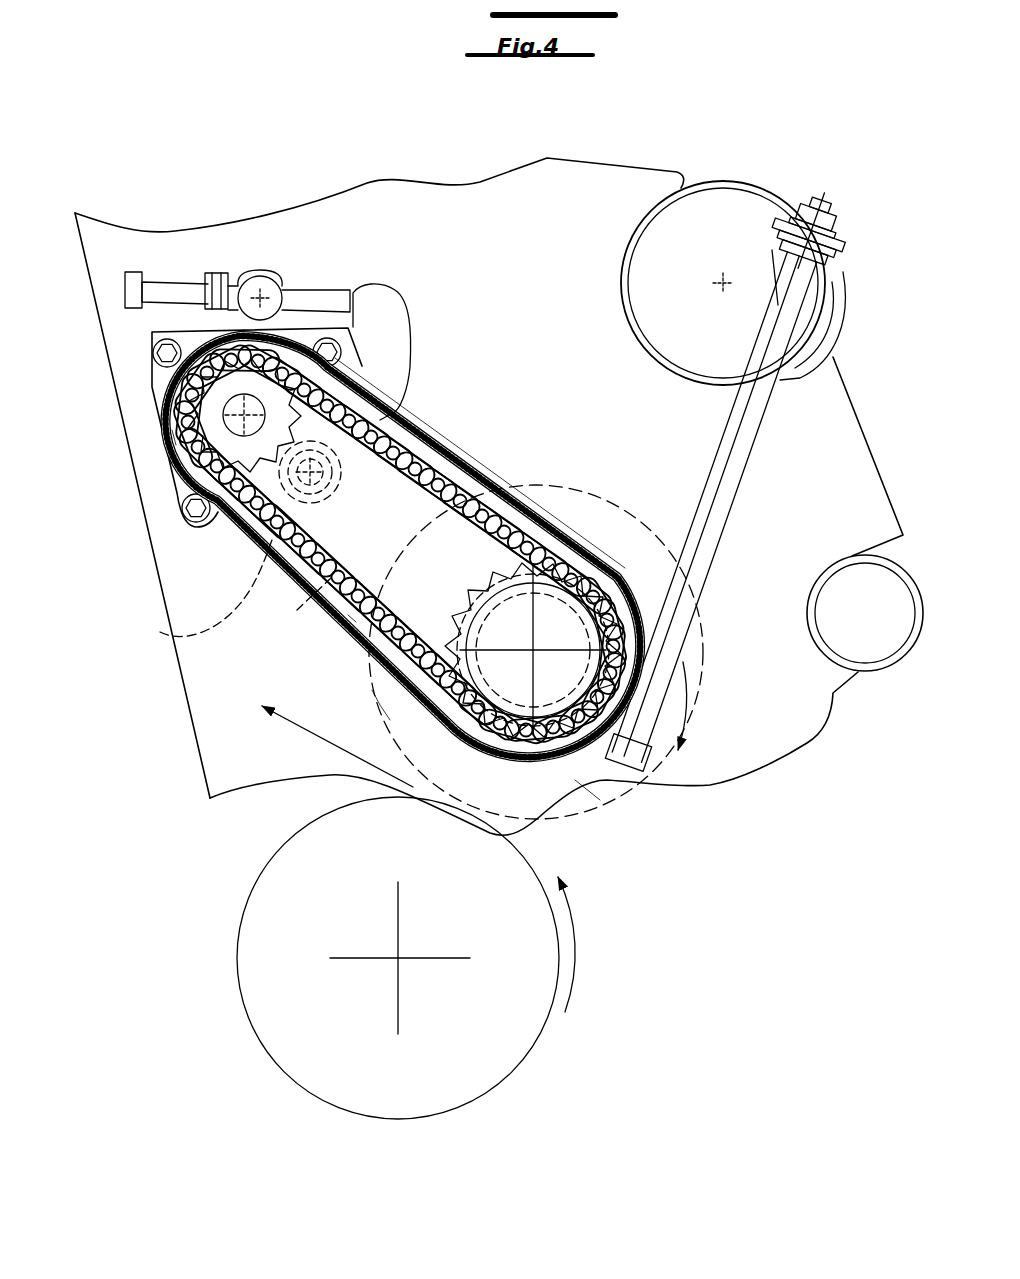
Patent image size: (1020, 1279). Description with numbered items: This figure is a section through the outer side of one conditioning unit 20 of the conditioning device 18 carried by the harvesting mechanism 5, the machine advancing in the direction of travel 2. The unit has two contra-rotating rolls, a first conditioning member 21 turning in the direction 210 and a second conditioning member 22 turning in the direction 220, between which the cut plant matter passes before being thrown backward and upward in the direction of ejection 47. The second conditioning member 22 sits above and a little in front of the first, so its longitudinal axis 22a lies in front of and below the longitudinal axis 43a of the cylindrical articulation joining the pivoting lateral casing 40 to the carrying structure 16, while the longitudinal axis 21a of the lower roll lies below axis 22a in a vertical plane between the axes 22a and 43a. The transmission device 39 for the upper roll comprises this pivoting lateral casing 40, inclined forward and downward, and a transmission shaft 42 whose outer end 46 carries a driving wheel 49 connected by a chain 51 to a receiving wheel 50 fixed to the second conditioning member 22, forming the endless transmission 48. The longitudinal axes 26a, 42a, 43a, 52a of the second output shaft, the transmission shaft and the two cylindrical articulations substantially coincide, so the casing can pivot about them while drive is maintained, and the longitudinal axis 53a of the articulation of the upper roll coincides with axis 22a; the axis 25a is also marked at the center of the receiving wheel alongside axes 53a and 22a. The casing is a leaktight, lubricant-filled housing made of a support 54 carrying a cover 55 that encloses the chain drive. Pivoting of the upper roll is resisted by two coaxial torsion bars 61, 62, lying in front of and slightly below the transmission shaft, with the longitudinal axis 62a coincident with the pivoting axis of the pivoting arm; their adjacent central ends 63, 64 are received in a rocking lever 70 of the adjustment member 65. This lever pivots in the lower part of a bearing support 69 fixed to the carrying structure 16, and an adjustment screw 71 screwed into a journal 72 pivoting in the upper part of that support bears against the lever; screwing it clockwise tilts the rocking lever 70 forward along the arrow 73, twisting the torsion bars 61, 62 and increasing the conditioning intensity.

The direction of travel 2 is at (895, 1063).
The harvesting mechanism 5 is at (443, 188).
The carrying structure 16 is at (676, 433).
The conditioning device 18 is at (750, 910).
The conditioning unit 20 is at (810, 873).
The first conditioning member 21 is at (398, 961).
The longitudinal axis of the first conditioning member 21a is at (393, 965).
The second conditioning member 22 is at (590, 793).
The longitudinal axis of the second conditioning member 22a is at (540, 657).
The sprocket axis 25a is at (647, 711).
The longitudinal axis of the second output shaft 26a is at (480, 463).
The transmission device 39 is at (172, 437).
The pivoting lateral casing 40 is at (493, 473).
The transmission shaft 42 is at (218, 427).
The longitudinal axis of the transmission shaft 42a is at (480, 463).
The longitudinal axis of the cylindrical articulation 43a is at (513, 402).
The outer end of the transmission shaft 46 is at (135, 322).
The direction of ejection 47 is at (307, 733).
The endless transmission 48 is at (352, 618).
The driving wheel 49 is at (170, 490).
The receiving wheel 50 is at (639, 668).
The chain 51 is at (380, 707).
The longitudinal axis of the cylindrical articulation 52a is at (480, 463).
The longitudinal axis of the cylindrical articulation 53a is at (647, 711).
The support 54 is at (300, 610).
The cover 55 is at (547, 475).
The torsion bar 61 is at (168, 590).
The torsion bar 62 is at (168, 590).
The longitudinal axis of the torsion bar 62a is at (337, 495).
The central end of the torsion bar 63 is at (168, 590).
The central end of the torsion bar 64 is at (165, 632).
The adjustment member 65 is at (253, 292).
The bearing support 69 is at (285, 277).
The rocking lever 70 is at (380, 323).
The adjustment screw 71 is at (167, 287).
The journal 72 is at (254, 281).
The arrow 73 is at (430, 322).
The direction of rotation 210 is at (575, 937).
The direction of rotation 220 is at (700, 703).